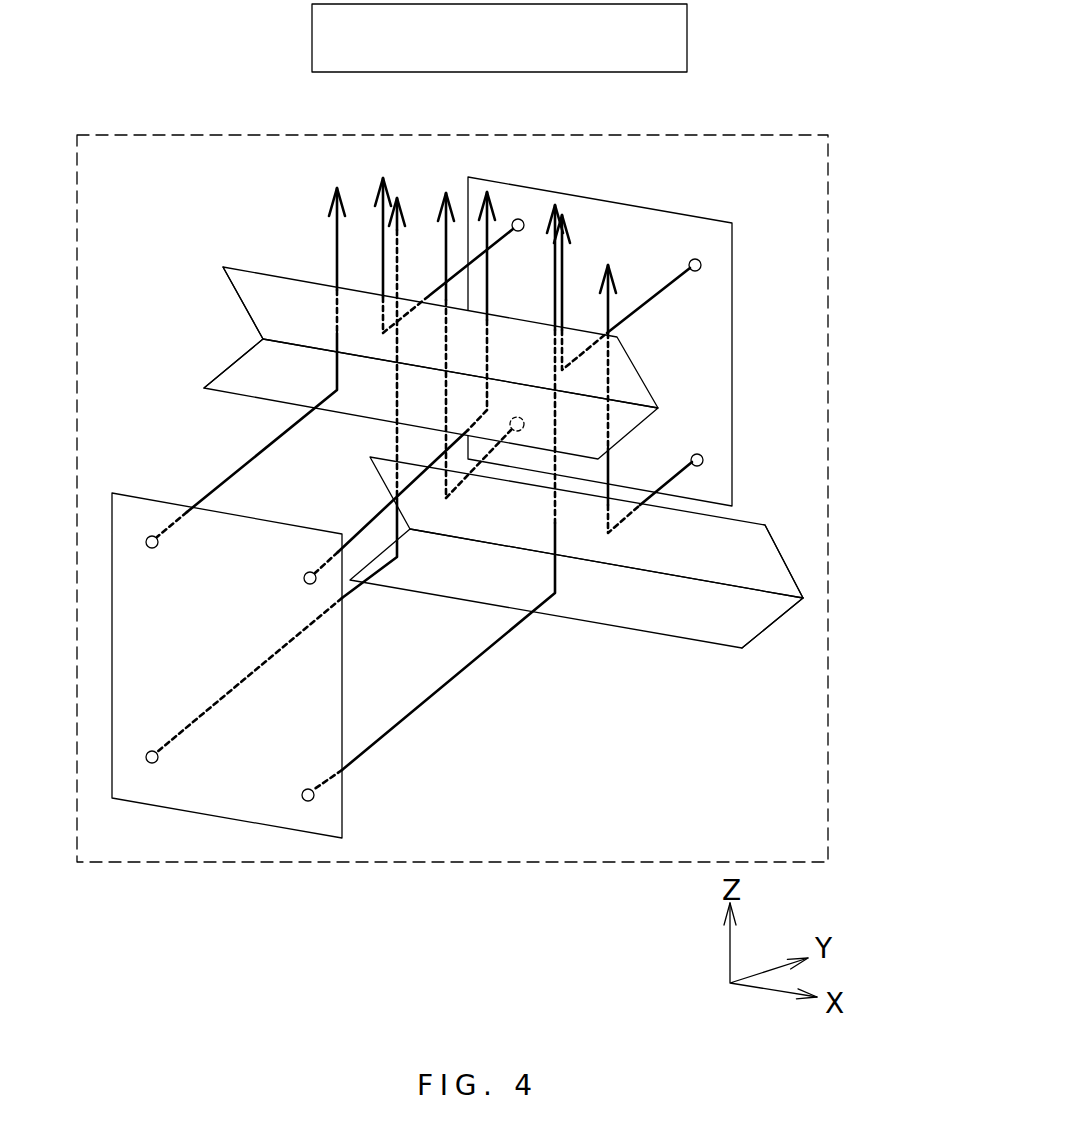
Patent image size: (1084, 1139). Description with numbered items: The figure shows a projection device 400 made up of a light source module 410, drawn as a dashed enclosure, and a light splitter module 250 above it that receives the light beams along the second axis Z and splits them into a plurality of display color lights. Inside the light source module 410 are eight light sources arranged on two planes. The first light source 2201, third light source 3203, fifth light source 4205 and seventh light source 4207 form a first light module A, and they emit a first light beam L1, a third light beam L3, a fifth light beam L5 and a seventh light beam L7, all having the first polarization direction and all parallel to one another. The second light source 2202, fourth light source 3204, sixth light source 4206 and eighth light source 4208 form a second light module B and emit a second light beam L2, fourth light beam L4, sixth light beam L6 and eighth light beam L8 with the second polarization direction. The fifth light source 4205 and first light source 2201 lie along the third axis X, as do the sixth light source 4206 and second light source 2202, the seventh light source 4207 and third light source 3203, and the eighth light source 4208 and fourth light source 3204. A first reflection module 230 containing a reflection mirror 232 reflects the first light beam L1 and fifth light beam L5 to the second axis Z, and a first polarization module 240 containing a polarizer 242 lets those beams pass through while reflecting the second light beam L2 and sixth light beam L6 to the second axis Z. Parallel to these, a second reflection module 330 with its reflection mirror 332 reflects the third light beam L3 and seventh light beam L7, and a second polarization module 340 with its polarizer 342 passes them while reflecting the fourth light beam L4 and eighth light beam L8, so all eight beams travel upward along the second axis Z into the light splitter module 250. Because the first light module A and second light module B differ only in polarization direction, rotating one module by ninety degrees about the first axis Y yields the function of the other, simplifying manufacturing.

The light splitter module 250 is at (312, 40).
The projection device 400 is at (742, 105).
The light source module 410 is at (453, 864).
The first polarization module 240 is at (250, 262).
The polarizer 242 is at (262, 300).
The first reflection module 230 is at (235, 413).
The reflection mirror 232 is at (243, 375).
The second polarization module 340 is at (792, 563).
The polarizer 342 is at (760, 567).
The second reflection module 330 is at (785, 618).
The reflection mirror 332 is at (755, 620).
The first light source 2201 is at (152, 549).
The second light source 2202 is at (518, 218).
The third light source 3203 is at (152, 764).
The fourth light source 3204 is at (517, 408).
The fifth light source 4205 is at (303, 578).
The sixth light source 4206 is at (700, 272).
The seventh light source 4207 is at (301, 795).
The eighth light source 4208 is at (697, 454).
The first light beam L1 is at (251, 371).
The second light beam L2 is at (451, 255).
The third light beam L3 is at (276, 475).
The fourth light beam L4 is at (474, 351).
The fifth light beam L5 is at (397, 382).
The sixth light beam L6 is at (622, 292).
The seventh light beam L7 is at (433, 497).
The eighth light beam L8 is at (646, 399).
The first light module A is at (332, 818).
The second light module B is at (610, 215).